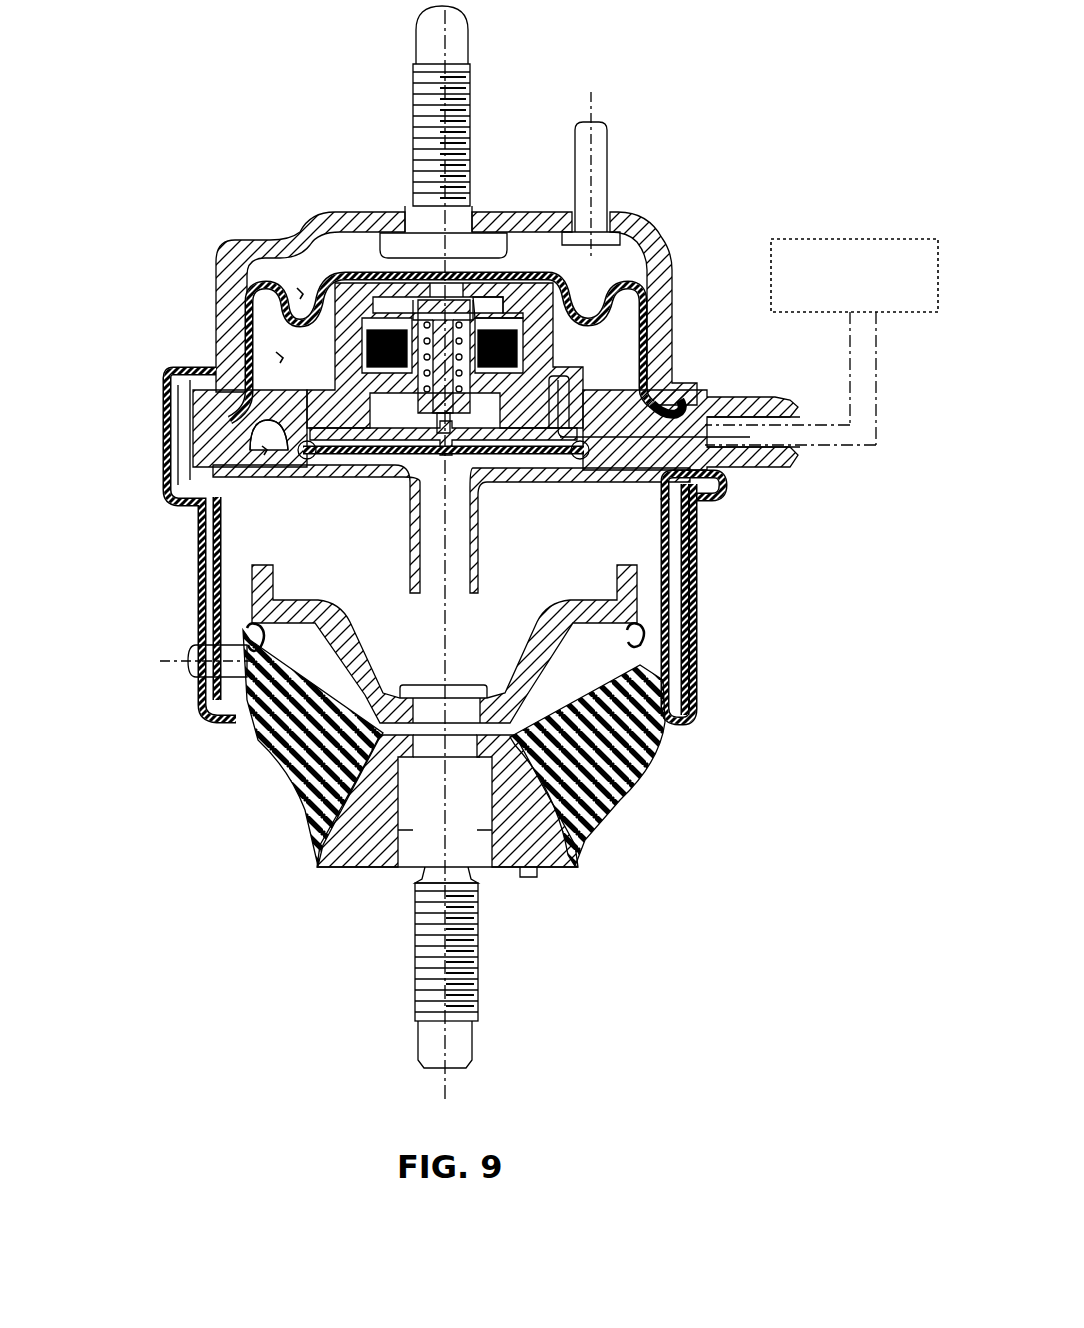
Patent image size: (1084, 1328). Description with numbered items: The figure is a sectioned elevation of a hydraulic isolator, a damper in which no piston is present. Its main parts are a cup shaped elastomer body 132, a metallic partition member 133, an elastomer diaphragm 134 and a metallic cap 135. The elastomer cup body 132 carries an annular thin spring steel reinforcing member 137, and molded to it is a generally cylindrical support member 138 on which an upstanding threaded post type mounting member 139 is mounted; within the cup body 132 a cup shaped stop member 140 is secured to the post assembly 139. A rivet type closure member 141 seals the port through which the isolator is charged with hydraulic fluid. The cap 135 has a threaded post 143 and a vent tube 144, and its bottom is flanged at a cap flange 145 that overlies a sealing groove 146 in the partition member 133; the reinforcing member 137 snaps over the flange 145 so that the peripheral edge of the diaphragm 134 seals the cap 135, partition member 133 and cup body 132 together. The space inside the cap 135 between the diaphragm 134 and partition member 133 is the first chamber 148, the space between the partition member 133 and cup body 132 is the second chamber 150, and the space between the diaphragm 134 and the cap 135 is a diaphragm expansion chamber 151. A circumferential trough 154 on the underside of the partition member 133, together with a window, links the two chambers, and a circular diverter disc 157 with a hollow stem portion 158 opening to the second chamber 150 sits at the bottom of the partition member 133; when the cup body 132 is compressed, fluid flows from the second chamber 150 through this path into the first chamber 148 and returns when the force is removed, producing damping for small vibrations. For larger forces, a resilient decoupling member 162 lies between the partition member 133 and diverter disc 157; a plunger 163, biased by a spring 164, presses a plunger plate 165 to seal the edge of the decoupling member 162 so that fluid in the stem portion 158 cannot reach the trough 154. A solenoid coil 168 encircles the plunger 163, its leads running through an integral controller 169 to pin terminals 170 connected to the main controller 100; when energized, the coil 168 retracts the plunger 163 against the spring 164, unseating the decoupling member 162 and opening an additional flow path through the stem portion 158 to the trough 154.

The main controller 100 is at (846, 238).
The elastomer cup body 132 is at (282, 760).
The partition member 133 is at (292, 377).
The elastomer diaphragm 134 is at (642, 312).
The cap 135 is at (648, 220).
The reinforcing member 137 is at (680, 672).
The support member 138 is at (550, 868).
The post type mounting member 139 is at (475, 1045).
The stop member 140 is at (255, 588).
The closure member 141 is at (192, 668).
The threaded post 143 is at (412, 70).
The vent tube 144 is at (607, 138).
The cap flange 145 is at (678, 410).
The sealing groove 146 is at (690, 420).
The first chamber 148 is at (278, 354).
The second chamber 150 is at (469, 555).
The diaphragm expansion chamber 151 is at (298, 290).
The trough 154 is at (262, 447).
The diverter disc 157 is at (200, 495).
The stem portion 158 is at (479, 578).
The decoupling member 162 is at (555, 468).
The plunger 163 is at (520, 357).
The spring 164 is at (430, 360).
The plunger plate 165 is at (322, 300).
The solenoid coil 168 is at (503, 330).
The integral controller 169 is at (515, 345).
The pin terminals 170 is at (737, 443).